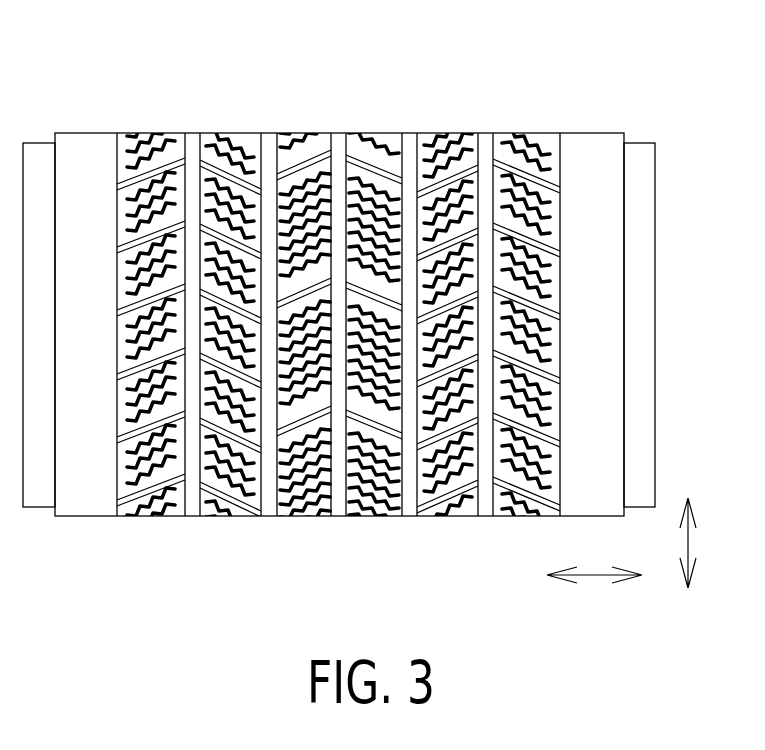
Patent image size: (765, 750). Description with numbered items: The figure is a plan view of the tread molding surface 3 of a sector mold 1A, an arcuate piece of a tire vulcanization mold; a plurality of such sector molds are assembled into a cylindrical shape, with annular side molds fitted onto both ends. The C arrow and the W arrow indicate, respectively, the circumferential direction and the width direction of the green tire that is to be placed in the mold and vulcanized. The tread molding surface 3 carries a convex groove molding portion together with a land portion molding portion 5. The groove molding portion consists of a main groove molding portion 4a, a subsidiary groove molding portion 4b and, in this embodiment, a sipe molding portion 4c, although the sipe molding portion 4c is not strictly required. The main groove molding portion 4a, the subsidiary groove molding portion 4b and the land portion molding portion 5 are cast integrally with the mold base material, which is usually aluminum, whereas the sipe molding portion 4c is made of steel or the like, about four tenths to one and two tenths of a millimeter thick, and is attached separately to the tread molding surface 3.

The sector mold 1A is at (339, 281).
The tread molding surface 3 is at (356, 287).
The main groove molding portion 4a is at (267, 138).
The subsidiary groove molding portion 4b is at (182, 157).
The sipe molding portion 4c is at (369, 176).
The land portion molding portion 5 is at (312, 179).
The W arrow W is at (594, 561).
The C arrow C is at (702, 543).